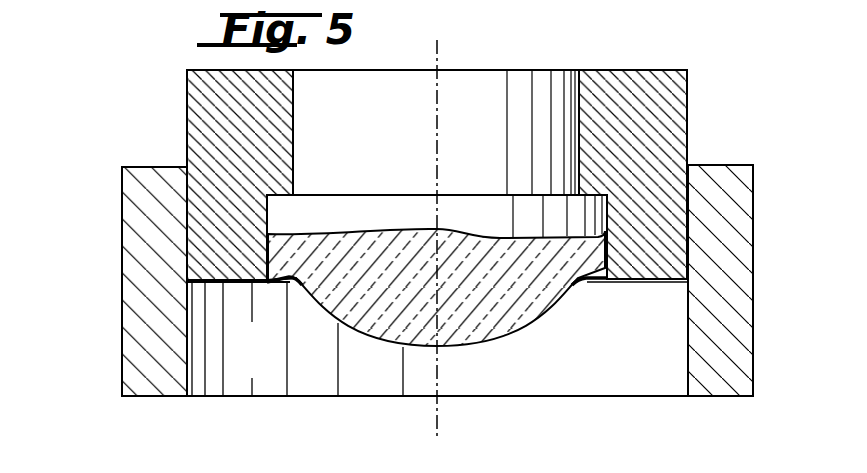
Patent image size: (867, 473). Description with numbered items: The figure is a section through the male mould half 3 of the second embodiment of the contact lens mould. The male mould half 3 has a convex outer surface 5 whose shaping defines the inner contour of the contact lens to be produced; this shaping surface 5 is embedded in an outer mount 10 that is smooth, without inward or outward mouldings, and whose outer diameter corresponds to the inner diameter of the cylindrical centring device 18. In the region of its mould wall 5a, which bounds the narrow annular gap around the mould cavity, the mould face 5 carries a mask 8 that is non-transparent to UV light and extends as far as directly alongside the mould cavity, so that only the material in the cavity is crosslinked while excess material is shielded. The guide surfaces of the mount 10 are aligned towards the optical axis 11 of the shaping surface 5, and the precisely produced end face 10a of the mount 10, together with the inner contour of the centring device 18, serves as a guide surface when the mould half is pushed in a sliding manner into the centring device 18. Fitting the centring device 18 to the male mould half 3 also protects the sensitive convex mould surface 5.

The male mould half 3 is at (187, 130).
The convex outer surface 5 is at (497, 337).
The mould wall 5a is at (281, 283).
The mask 8 is at (290, 283).
The mount 10 is at (668, 133).
The end face 10a is at (628, 283).
The optical axis 11 is at (437, 428).
The centring device 18 is at (730, 279).